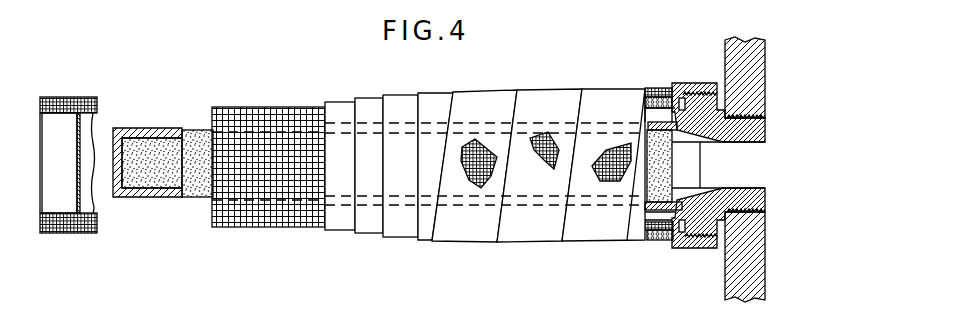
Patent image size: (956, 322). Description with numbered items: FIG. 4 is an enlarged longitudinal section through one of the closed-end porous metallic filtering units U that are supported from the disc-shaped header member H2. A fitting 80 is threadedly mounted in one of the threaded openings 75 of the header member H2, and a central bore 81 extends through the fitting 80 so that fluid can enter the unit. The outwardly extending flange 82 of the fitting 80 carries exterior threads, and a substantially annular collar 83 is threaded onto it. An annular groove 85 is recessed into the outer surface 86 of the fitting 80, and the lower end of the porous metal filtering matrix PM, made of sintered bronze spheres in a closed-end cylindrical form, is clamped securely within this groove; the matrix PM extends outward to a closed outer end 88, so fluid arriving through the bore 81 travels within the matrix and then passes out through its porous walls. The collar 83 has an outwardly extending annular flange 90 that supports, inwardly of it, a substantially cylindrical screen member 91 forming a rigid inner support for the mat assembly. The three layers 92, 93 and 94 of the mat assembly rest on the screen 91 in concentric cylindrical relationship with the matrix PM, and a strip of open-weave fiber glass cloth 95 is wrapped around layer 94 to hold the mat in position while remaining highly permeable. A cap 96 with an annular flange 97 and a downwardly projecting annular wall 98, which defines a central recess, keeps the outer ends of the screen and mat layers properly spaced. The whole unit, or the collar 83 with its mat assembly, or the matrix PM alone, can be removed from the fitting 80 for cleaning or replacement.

The opening 75 is at (765, 112).
The fitting 80 is at (757, 128).
The central bore 81 is at (760, 150).
The outwardly extending flange 82 is at (708, 82).
The annular collar 83 is at (693, 82).
The annular groove 85 is at (720, 141).
The outer surface 86 is at (647, 217).
The closed outer end 88 is at (128, 141).
The annular flange 90 is at (663, 243).
The screen member 91 is at (97, 112).
The mat assembly layer 92 is at (647, 103).
The mat assembly layer 93 is at (653, 91).
The mat assembly layer 94 is at (659, 97).
The fiber glass cloth strip 95 is at (480, 102).
The cap 96 is at (77, 161).
The annular flange 97 is at (37, 102).
The annular wall 98 is at (60, 117).
The porous metal filtering matrix PM is at (197, 130).
The porous metallic filtering unit U is at (533, 88).
The header member H2 is at (752, 253).